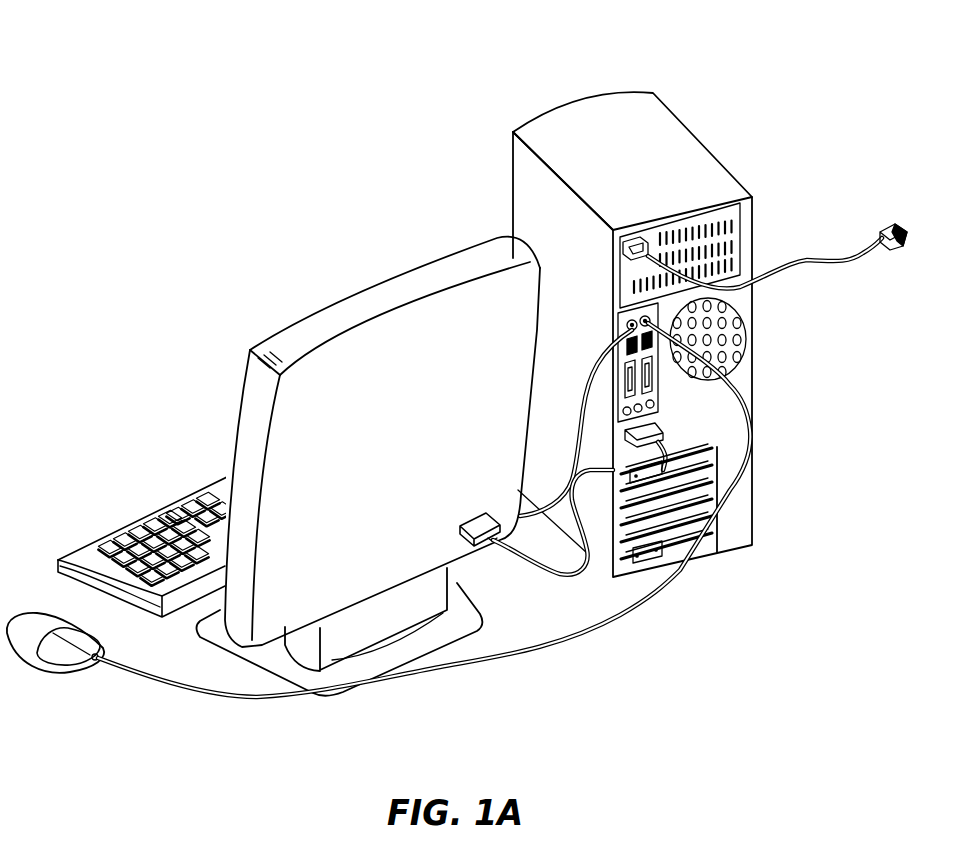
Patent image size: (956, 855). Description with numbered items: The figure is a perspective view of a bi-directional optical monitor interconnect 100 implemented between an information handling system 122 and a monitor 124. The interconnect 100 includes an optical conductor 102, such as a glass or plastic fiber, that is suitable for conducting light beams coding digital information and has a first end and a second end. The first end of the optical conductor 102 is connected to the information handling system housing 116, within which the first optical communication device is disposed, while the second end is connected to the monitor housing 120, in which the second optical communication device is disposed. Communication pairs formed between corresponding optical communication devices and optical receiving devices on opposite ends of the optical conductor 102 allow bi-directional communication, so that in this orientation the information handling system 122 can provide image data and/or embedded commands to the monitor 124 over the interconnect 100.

The bi-directional optical monitor interconnect 100 is at (52, 168).
The optical conductor 102 is at (548, 660).
The information handling system housing 116 is at (707, 178).
The monitor housing 120 is at (318, 323).
The information handling system 122 is at (579, 97).
The monitor 124 is at (397, 267).